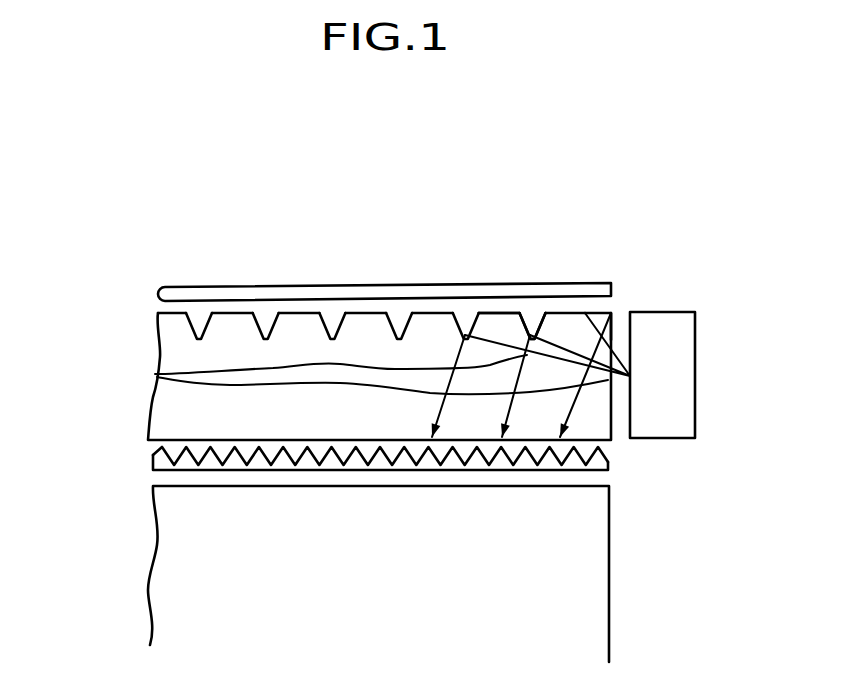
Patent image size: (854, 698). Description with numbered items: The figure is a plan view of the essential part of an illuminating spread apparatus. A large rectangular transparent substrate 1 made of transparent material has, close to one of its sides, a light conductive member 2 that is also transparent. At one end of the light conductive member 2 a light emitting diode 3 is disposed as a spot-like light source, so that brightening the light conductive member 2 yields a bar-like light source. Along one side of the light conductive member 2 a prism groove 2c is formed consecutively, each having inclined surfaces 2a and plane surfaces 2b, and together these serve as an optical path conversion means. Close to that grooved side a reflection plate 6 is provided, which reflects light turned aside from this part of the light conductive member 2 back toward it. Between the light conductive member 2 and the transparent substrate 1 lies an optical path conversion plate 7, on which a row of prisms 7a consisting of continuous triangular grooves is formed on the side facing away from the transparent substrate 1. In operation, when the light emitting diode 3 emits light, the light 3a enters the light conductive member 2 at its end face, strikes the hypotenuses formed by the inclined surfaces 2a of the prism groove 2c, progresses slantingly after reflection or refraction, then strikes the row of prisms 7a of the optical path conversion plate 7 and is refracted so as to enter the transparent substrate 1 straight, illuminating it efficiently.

The transparent substrate 1 is at (586, 587).
The light conductive member 2 is at (432, 281).
The inclined surfaces 2a is at (460, 320).
The plane surfaces 2b is at (432, 317).
The prism groove 2c is at (618, 187).
The light emitting diode 3 is at (672, 376).
The light 3a is at (155, 373).
The reflection plate 6 is at (613, 305).
The optical path conversion plate 7 is at (620, 462).
The row of prisms 7a is at (556, 448).